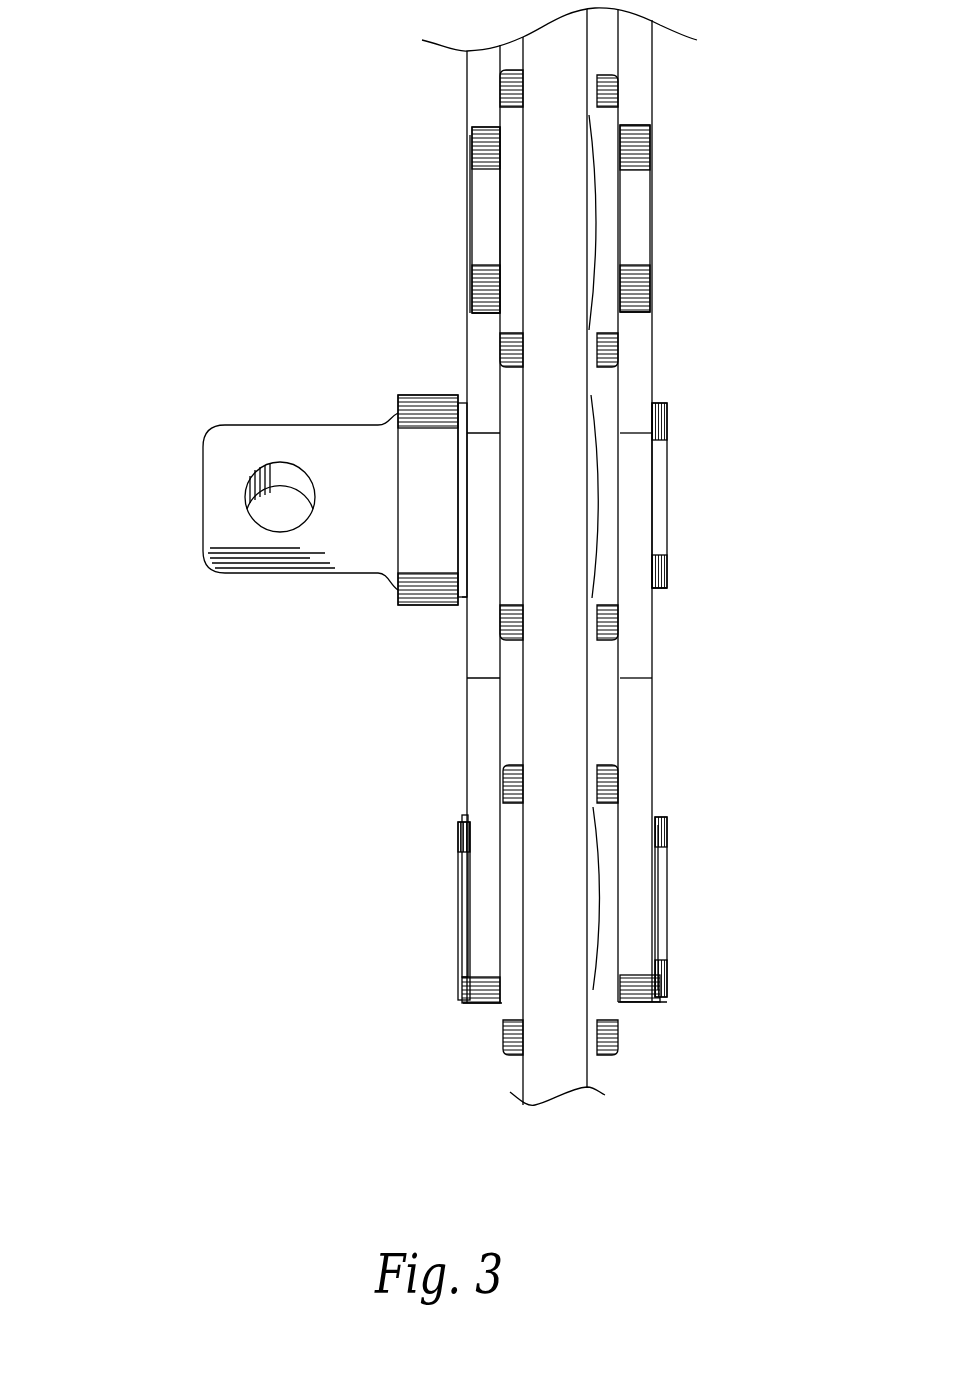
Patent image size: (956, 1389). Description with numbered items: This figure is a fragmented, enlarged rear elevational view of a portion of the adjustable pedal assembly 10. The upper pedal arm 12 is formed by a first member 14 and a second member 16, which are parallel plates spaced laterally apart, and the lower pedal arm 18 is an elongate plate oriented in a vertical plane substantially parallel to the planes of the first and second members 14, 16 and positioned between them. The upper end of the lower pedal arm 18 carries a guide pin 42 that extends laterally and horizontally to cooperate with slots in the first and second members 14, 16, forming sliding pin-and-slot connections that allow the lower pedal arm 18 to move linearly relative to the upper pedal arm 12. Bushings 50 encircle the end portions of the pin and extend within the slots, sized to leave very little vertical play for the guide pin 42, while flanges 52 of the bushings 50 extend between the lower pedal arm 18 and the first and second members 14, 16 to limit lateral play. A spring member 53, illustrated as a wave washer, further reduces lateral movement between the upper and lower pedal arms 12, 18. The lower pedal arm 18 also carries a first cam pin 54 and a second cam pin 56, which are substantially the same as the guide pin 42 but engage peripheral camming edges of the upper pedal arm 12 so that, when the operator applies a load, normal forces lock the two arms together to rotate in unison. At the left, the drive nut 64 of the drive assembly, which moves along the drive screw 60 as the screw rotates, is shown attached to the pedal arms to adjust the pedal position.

The adjustable pedal assembly 10 is at (190, 107).
The upper pedal arm 12 is at (658, 745).
The first member 14 is at (653, 797).
The second member 16 is at (470, 735).
The lower pedal arm 18 is at (592, 717).
The guide pin 42 is at (667, 523).
The bushing 50 is at (500, 322).
The flange 52 is at (500, 333).
The spring member 53 is at (593, 173).
The first cam pin 54 is at (472, 178).
The second cam pin 56 is at (457, 900).
The drive screw 60 is at (287, 523).
The drive nut 64 is at (207, 513).